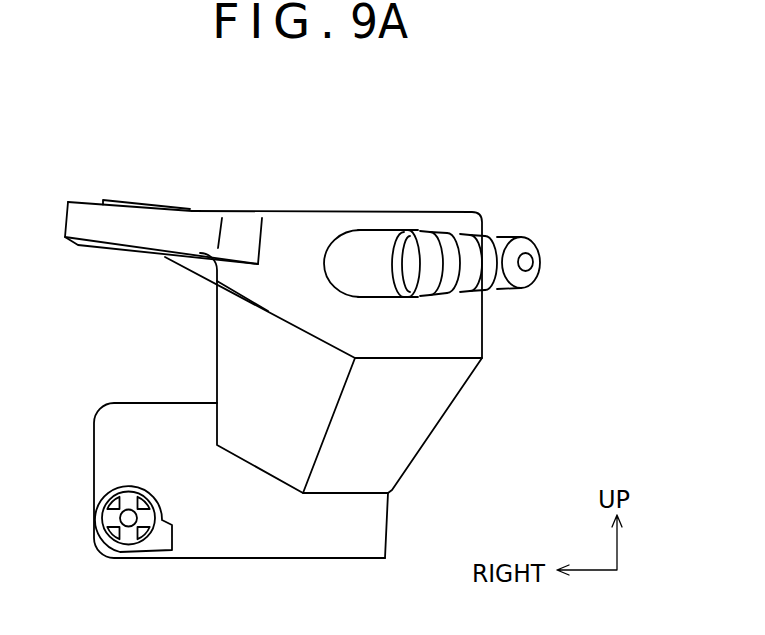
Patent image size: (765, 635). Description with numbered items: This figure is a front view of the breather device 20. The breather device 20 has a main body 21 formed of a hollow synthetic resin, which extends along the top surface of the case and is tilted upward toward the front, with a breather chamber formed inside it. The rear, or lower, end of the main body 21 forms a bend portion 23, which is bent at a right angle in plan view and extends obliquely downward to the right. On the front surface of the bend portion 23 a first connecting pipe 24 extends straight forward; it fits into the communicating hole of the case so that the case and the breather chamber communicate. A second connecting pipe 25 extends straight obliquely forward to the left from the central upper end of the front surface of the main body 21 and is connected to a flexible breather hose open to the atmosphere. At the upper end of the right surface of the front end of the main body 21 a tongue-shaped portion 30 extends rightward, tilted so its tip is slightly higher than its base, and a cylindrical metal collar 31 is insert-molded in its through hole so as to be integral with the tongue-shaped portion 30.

The breather device 20 is at (561, 127).
The main body 21 is at (470, 423).
The bend portion 23 is at (102, 458).
The first connecting pipe 24 is at (97, 515).
The second connecting pipe 25 is at (492, 232).
The tongue-shaped portion 30 is at (88, 202).
The cylindrical metal collar 31 is at (120, 202).